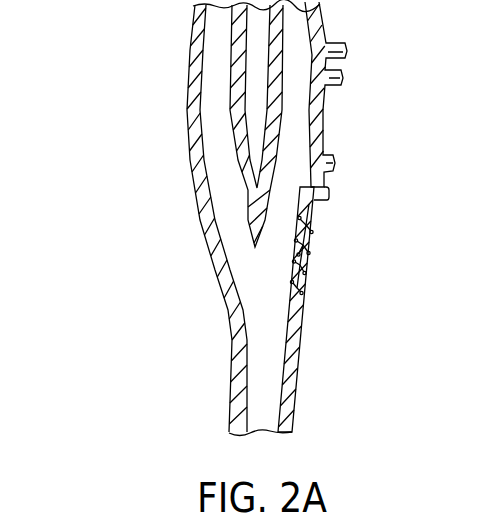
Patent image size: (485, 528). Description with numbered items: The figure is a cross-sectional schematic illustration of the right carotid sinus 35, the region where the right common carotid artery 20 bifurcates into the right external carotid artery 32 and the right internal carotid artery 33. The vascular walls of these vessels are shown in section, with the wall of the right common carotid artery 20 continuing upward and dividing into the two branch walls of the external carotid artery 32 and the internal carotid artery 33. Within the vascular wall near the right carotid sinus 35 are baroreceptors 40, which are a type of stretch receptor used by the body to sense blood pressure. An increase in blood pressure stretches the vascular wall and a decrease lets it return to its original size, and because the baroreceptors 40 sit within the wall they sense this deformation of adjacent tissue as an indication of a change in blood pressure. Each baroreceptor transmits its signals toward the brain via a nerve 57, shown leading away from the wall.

The right common carotid artery 20 is at (262, 217).
The right external carotid artery 32 is at (192, 57).
The right internal carotid artery 33 is at (322, 17).
The right carotid sinus 35 is at (190, 290).
The baroreceptors 40 is at (318, 276).
The nerve 57 is at (310, 258).